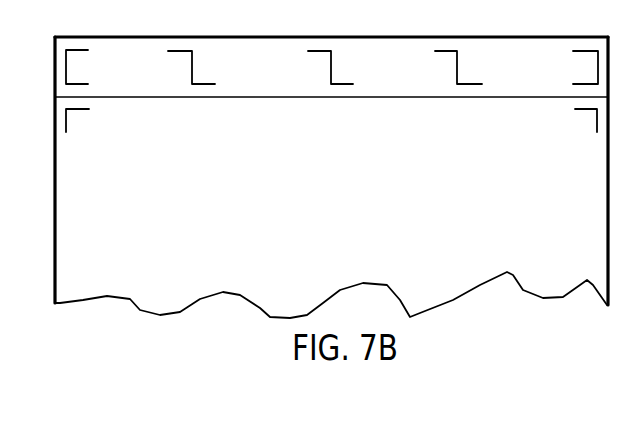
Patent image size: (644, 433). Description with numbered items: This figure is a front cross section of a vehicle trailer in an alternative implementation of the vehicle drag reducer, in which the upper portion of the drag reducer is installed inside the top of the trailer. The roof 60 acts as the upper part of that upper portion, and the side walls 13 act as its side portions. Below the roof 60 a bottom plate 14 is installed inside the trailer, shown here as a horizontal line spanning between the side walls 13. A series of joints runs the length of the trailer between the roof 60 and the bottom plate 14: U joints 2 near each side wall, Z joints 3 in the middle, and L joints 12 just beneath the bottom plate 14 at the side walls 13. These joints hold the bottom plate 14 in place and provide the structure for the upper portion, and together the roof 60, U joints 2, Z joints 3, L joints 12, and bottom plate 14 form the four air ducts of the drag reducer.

The U joints 2 is at (78, 51).
The Z joints 3 is at (193, 62).
The L joints 12 is at (78, 110).
The side walls 13 is at (55, 235).
The bottom plate 14 is at (353, 98).
The roof 60 is at (412, 38).